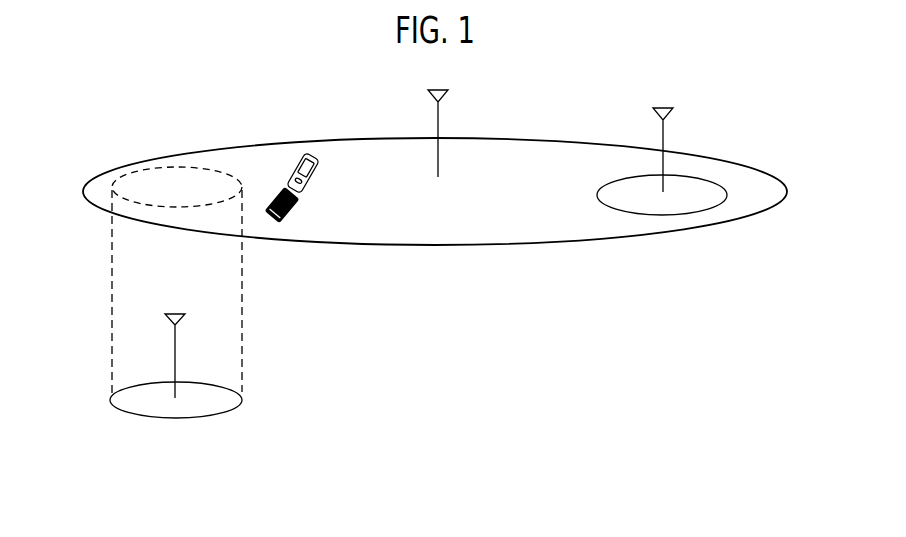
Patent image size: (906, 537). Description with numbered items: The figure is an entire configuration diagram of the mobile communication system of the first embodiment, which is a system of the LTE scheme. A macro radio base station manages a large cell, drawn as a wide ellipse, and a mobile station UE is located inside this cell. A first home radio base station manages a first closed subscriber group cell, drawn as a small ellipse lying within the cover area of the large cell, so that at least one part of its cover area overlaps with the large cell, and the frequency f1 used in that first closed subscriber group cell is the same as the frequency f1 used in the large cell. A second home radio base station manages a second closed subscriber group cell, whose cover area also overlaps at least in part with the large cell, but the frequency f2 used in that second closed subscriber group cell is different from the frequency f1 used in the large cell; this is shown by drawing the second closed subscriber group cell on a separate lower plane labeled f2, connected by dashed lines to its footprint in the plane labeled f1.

The mobile station UE is at (299, 188).
The frequency f1 is at (30, 190).
The frequency f2 is at (25, 398).